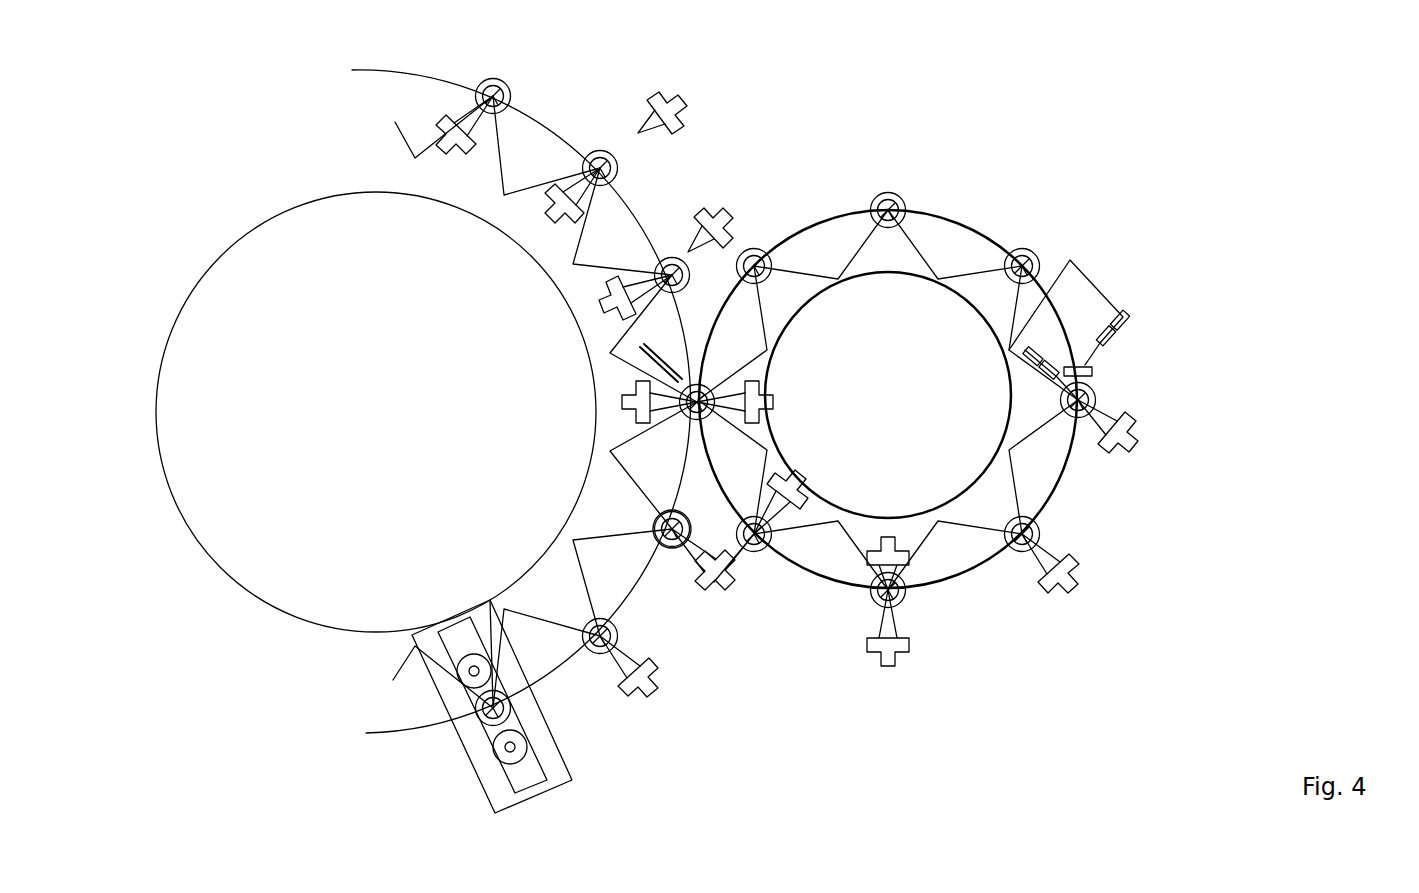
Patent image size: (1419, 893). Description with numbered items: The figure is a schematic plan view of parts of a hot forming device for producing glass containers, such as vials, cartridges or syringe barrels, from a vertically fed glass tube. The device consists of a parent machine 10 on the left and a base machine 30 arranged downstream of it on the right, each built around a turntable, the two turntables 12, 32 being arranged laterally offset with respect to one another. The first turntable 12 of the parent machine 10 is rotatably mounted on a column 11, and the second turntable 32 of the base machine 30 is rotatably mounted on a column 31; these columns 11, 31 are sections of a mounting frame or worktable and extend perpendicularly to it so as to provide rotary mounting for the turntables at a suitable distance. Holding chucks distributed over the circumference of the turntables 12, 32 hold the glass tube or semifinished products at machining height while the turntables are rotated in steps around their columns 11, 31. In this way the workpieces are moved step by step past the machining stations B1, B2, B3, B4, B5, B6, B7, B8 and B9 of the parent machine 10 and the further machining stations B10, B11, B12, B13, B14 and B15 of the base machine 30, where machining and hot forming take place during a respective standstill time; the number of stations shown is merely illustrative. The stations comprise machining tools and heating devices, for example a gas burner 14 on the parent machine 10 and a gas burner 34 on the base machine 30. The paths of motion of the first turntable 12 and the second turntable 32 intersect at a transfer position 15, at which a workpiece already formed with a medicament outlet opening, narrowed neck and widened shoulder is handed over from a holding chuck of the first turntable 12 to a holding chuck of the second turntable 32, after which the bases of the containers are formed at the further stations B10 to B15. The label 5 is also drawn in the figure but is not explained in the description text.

The parent machine 10 is at (193, 61).
The column 11 is at (212, 268).
The turntable 12 is at (420, 73).
The gas burner 14 is at (655, 90).
The transfer position 15 is at (690, 412).
The base machine 30 is at (1133, 108).
The column 31 is at (915, 265).
The turntable 32 is at (925, 208).
The gas burner 34 is at (1140, 430).
The product 5 is at (974, 503).
The machining station B1 is at (455, 141).
The machining station B2 is at (556, 209).
The machining station B3 is at (678, 107).
The machining station B4 is at (620, 305).
The machining station B5 is at (727, 222).
The machining station B6 is at (640, 402).
The machining station B7 is at (691, 529).
The machining station B8 is at (713, 578).
The machining station B9 is at (642, 682).
The machining station B10 is at (762, 402).
The machining station B11 is at (804, 492).
The machining station B12 is at (885, 644).
The machining station B13 is at (887, 551).
The machining station B14 is at (1072, 577).
The machining station B15 is at (1127, 439).